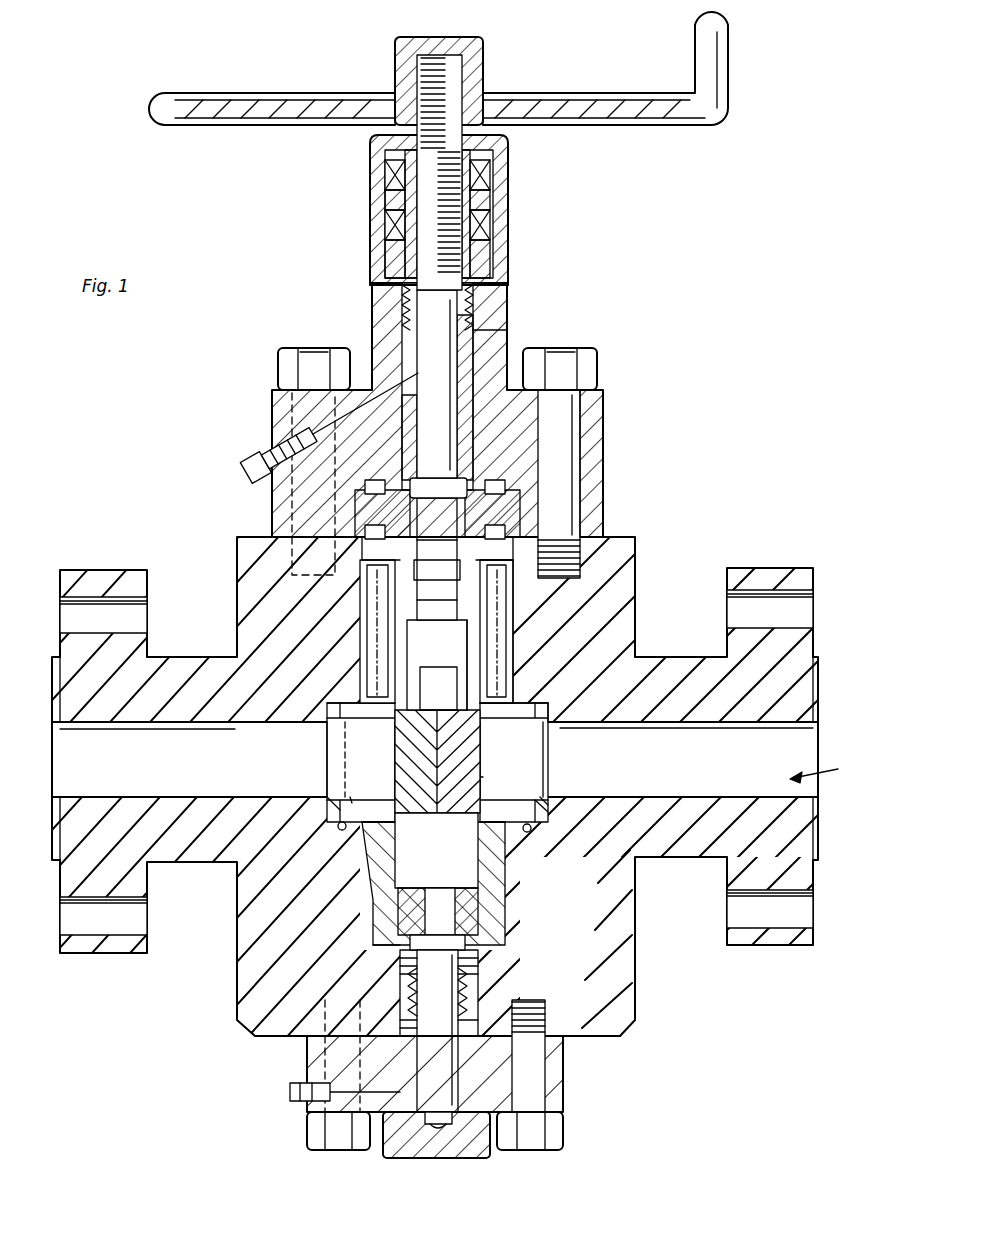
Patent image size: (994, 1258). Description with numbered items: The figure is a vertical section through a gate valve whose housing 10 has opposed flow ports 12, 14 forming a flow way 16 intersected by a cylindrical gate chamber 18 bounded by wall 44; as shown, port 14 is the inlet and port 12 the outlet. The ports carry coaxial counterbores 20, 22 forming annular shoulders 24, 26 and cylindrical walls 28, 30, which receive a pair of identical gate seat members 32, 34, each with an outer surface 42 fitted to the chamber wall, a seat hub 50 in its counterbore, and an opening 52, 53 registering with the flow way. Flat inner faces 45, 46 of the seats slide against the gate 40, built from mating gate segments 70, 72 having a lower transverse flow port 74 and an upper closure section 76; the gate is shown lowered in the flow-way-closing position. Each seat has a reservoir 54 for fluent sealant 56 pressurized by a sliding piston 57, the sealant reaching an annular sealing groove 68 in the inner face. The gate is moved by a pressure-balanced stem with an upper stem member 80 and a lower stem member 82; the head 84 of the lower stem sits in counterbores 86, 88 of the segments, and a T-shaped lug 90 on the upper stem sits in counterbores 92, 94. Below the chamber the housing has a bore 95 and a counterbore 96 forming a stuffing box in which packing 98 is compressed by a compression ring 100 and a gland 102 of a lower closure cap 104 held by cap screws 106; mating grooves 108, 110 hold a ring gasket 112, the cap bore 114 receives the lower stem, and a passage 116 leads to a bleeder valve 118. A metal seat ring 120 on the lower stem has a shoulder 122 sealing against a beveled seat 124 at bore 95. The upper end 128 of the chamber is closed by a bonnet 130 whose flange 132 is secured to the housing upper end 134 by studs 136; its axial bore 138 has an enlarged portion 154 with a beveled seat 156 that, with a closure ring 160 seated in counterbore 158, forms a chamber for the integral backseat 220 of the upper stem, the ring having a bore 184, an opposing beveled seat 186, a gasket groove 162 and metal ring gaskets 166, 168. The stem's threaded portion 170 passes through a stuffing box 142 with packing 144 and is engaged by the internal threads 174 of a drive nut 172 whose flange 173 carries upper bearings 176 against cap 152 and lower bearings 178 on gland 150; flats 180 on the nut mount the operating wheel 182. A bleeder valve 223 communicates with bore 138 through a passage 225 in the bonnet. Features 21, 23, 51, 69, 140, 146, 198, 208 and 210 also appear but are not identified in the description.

The valve housing 10 is at (642, 548).
The flow port 12 is at (759, 768).
The flow port 14 is at (162, 770).
The flow way 16 is at (826, 770).
The gate chamber 18 is at (514, 660).
The counterbore 20 is at (327, 713).
The seal ring 21 is at (340, 828).
The counterbore 22 is at (612, 712).
The seal ring 23 is at (530, 829).
The annular shoulder 24 is at (335, 800).
The annular shoulder 26 is at (548, 800).
The cylindrical wall 28 is at (352, 800).
The cylindrical wall 30 is at (548, 808).
The gate seat member 32 is at (368, 832).
The gate seat member 34 is at (490, 840).
The gate 40 is at (482, 777).
The outwardly facing surface 42 is at (520, 710).
The chamber wall 44 is at (514, 647).
The inner end face 45 is at (358, 618).
The inner surface 46 is at (478, 598).
The seat hub 50 is at (585, 713).
The seat ring lip 51 is at (330, 706).
The transverse opening 52 is at (518, 716).
The opening 53 is at (330, 735).
The reservoir 54 is at (496, 600).
The sealant 56 is at (500, 672).
The piston 57 is at (506, 578).
The annular sealing groove 68 is at (450, 706).
The seat ring bore 69 is at (393, 745).
The gate segment 70 is at (407, 754).
The gate segment 72 is at (468, 742).
The transverse flow port 74 is at (465, 862).
The closure section 76 is at (470, 760).
The upper stem member 80 is at (446, 442).
The lower stem member 82 is at (450, 1017).
The head 84 is at (428, 900).
The counterbore 86 is at (372, 916).
The counterbore 88 is at (462, 930).
The T-shaped lug member 90 is at (425, 620).
The T-shaped counterbore 92 is at (410, 670).
The semi-circular counterbore 94 is at (472, 648).
The bore 95 is at (480, 962).
The counterbore 96 is at (400, 972).
The annular packing 98 is at (402, 992).
The compression ring 100 is at (408, 1000).
The gland 102 is at (410, 1012).
The lower closure cap 104 is at (562, 1040).
The cap screws 106 is at (555, 1128).
The annular groove 108 is at (476, 1005).
The annular groove 110 is at (500, 1045).
The lower ring gasket 112 is at (503, 1015).
The bore 114 is at (440, 1124).
The transverse passage 116 is at (305, 1076).
The bleeder valve 118 is at (290, 1091).
The metal seat ring 120 is at (372, 940).
The annular shoulder 122 is at (480, 945).
The beveled seat 124 is at (395, 958).
The upper end of chamber 128 is at (457, 548).
The bonnet 130 is at (500, 345).
The closure flange 132 is at (582, 468).
The upper end of housing 134 is at (637, 543).
The studs 136 is at (280, 368).
The axial bore 138 is at (445, 378).
The bonnet 140 is at (395, 345).
The stuffing box 142 is at (505, 310).
The packing 144 is at (505, 325).
The bonnet upper end 146 is at (405, 330).
The gland 150 is at (480, 250).
The cap 152 is at (490, 200).
The enlarged portion 154 is at (473, 446).
The beveled seat 156 is at (472, 428).
The lower counterbore 158 is at (357, 512).
The closure ring 160 is at (355, 530).
The upper ring gasket groove 162 is at (395, 457).
The upper metal ring gasket 166 is at (355, 494).
The lower metal ring gasket 168 is at (572, 508).
The externally threaded portion 170 is at (425, 176).
The drive nut 172 is at (462, 100).
The annular flange 173 is at (482, 205).
The internal threads 174 is at (448, 40).
The upper antifriction bearings 176 is at (507, 165).
The lower antifriction bearings 178 is at (492, 228).
The flats 180 is at (478, 98).
The operating wheel 182 is at (722, 63).
The bore 184 is at (415, 505).
The beveled conical seat 186 is at (430, 478).
The seal carrier 198 is at (352, 568).
The bolt hole 208 is at (340, 548).
The stem shoulder 210 is at (460, 538).
The backseat 220 is at (466, 483).
The bleeder valve 223 is at (265, 452).
The passage 225 is at (360, 413).